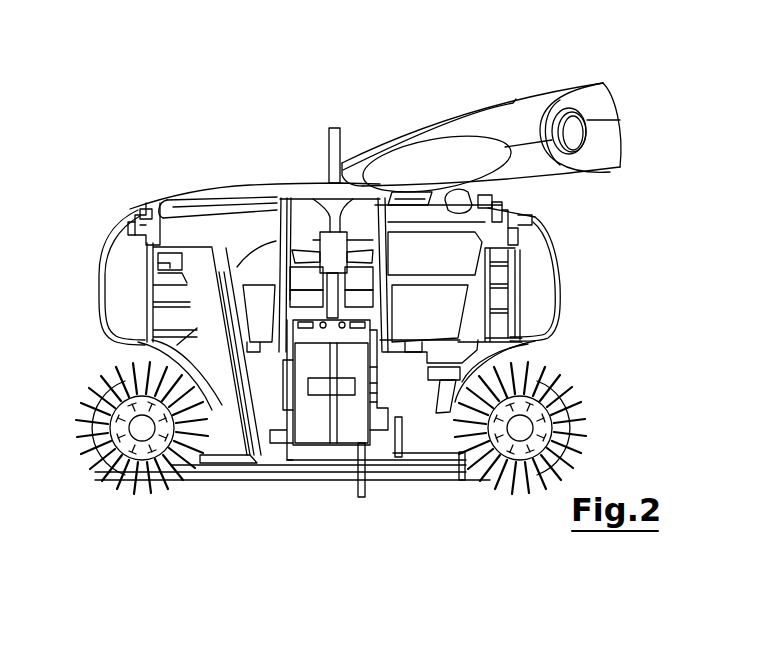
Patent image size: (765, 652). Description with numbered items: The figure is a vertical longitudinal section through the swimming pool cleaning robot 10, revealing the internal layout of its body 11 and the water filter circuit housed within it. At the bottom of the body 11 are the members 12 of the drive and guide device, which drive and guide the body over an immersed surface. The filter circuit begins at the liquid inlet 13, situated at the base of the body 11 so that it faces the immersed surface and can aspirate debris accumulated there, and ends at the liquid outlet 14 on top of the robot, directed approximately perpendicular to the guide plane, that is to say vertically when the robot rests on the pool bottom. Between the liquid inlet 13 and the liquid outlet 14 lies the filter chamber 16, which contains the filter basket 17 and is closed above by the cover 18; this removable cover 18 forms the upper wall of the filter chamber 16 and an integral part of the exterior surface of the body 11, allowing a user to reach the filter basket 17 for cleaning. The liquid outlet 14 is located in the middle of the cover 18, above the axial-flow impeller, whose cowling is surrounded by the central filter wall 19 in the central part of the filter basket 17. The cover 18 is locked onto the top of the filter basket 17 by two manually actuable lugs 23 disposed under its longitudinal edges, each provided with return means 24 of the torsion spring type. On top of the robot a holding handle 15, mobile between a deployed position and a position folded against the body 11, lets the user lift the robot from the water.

The swimming pool cleaning robot 10 is at (596, 205).
The body 11 is at (560, 255).
The members for driving and guiding 12 is at (470, 473).
The liquid inlet 13 is at (263, 455).
The liquid outlet 14 is at (299, 186).
The holding handle 15 is at (590, 97).
The filter chamber 16 is at (426, 236).
The filter basket 17 is at (222, 222).
The cover 18 is at (225, 200).
The central filter wall 19 is at (387, 263).
The lugs 23 is at (147, 208).
The return means 24 is at (505, 212).